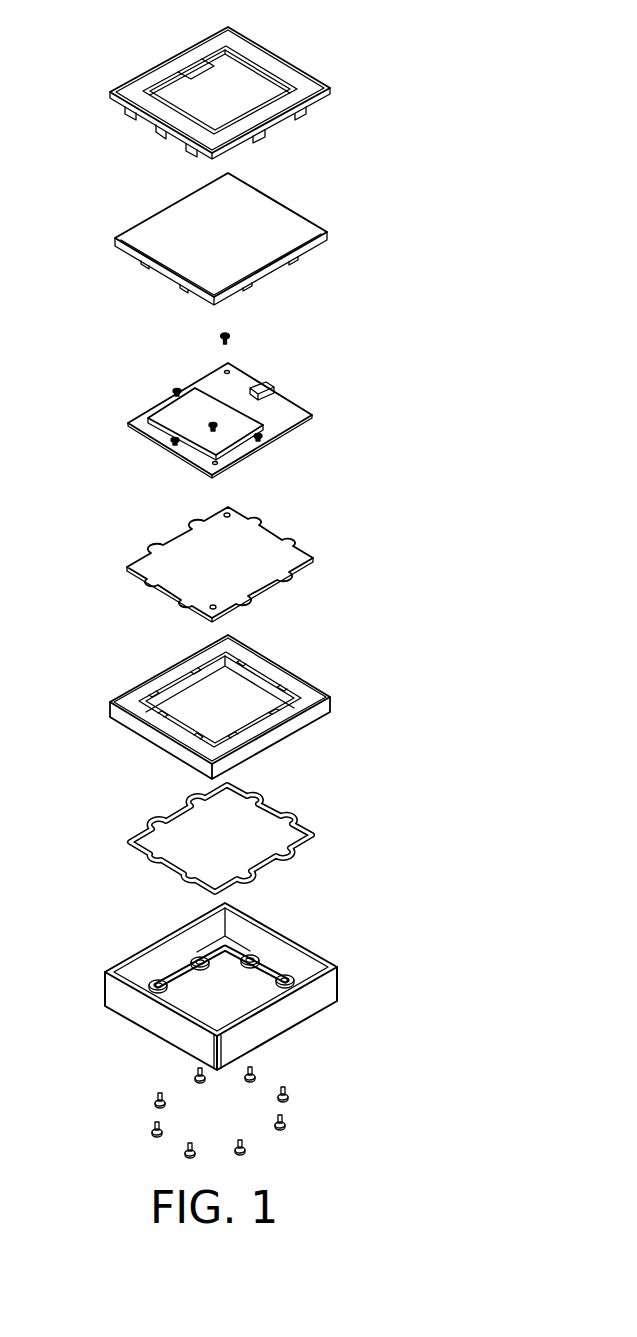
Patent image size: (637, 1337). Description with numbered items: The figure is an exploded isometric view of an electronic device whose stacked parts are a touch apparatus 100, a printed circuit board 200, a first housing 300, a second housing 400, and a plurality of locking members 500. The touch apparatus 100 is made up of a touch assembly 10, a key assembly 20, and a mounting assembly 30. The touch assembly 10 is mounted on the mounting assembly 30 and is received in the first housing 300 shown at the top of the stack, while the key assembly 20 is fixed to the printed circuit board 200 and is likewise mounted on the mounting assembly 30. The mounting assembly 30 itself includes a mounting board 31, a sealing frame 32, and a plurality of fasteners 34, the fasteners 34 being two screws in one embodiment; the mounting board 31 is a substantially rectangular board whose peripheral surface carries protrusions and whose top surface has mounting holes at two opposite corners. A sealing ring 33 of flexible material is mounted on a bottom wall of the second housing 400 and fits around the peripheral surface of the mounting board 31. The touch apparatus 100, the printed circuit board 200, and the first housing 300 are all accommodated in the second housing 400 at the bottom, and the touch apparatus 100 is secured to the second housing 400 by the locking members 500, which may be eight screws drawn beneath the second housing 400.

The touch apparatus 100 is at (382, 250).
The first housing 300 is at (317, 102).
The touch assembly 10 is at (280, 245).
The fasteners 34 is at (220, 336).
The printed circuit board 200 is at (152, 435).
The key assembly 20 is at (263, 385).
The mounting assembly 30 is at (383, 558).
The mounting board 31 is at (292, 560).
The sealing frame 32 is at (283, 680).
The sealing ring 33 is at (270, 807).
The second housing 400 is at (325, 987).
The locking members 500 is at (287, 1092).